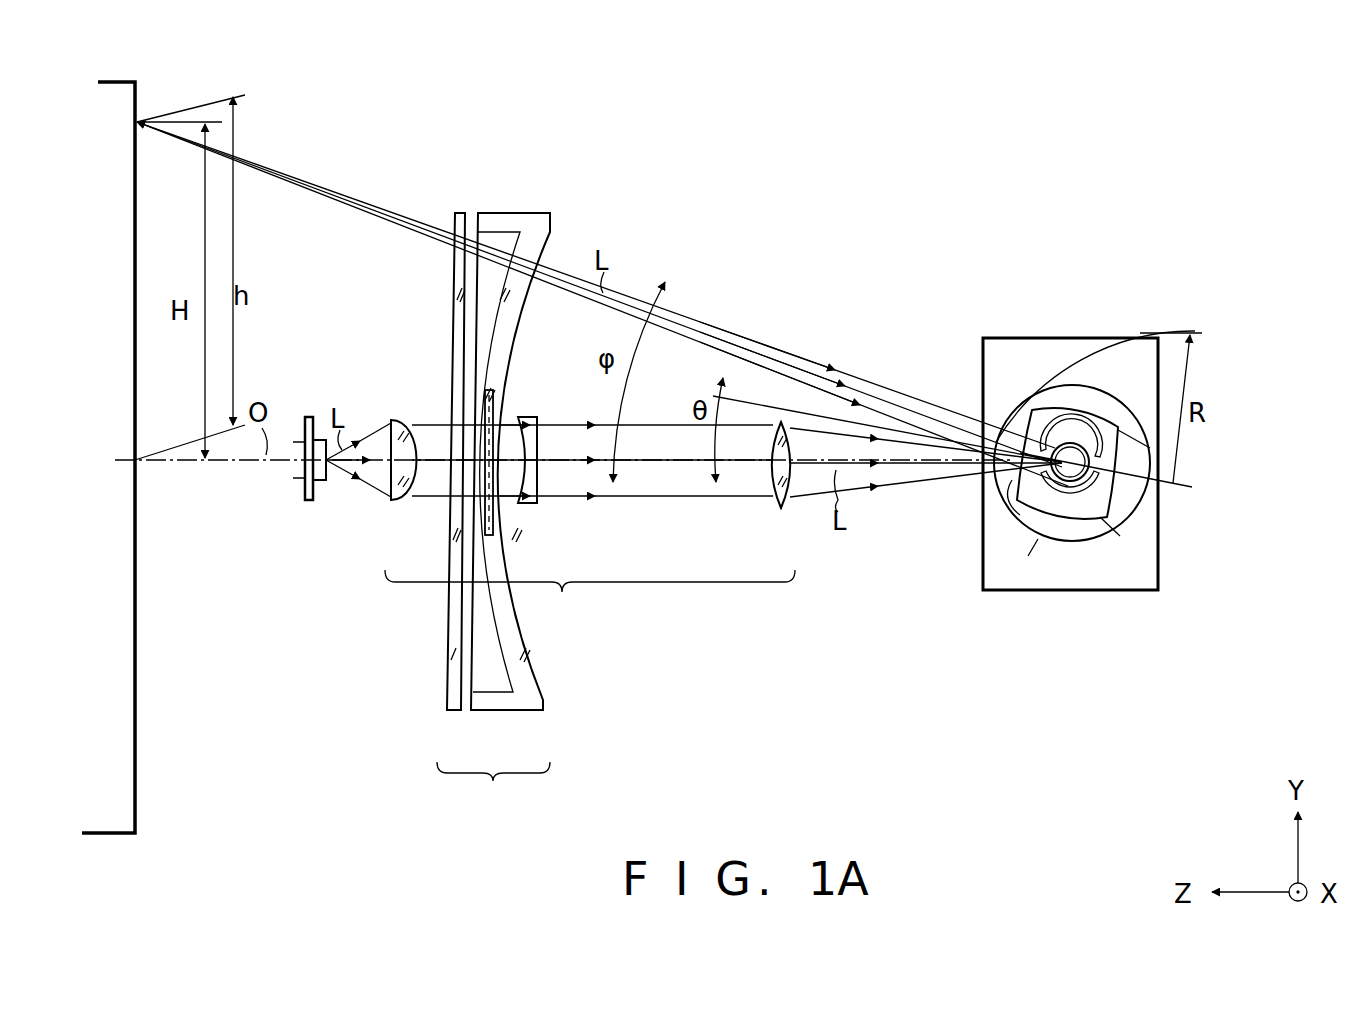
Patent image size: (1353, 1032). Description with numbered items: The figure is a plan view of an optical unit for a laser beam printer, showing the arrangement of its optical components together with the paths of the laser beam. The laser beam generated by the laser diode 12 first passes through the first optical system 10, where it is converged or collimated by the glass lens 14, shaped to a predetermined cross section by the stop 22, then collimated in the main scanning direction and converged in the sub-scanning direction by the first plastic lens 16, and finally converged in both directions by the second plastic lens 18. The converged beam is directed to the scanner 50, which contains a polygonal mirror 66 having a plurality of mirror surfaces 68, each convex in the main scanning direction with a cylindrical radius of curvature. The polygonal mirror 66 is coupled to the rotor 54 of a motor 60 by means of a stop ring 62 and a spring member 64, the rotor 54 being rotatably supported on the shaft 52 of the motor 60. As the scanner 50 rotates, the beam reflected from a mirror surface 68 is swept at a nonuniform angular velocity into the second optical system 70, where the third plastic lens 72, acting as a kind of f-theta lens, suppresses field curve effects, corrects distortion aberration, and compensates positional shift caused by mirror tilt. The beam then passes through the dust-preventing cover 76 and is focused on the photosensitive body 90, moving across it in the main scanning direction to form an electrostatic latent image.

The first optical system 10 is at (590, 597).
The laser diode 12 is at (308, 502).
The glass lens 14 is at (393, 502).
The first plastic lens 16 is at (530, 505).
The second plastic lens 18 is at (781, 510).
The stop 22 is at (495, 410).
The scanner 50 is at (1074, 433).
The shaft 52 is at (1074, 458).
The rotor 54 is at (1103, 538).
The motor 60 is at (1012, 412).
The stop ring 62 is at (1083, 443).
The spring member 64 is at (1120, 483).
The polygonal mirror 66 is at (1068, 503).
The mirror surface 68 is at (1012, 515).
The second optical system 70 is at (493, 788).
The third plastic lens 72 is at (530, 712).
The dust-preventing cover 76 is at (455, 712).
The photosensitive body 90 is at (135, 790).